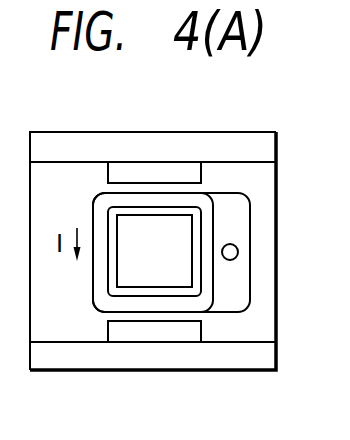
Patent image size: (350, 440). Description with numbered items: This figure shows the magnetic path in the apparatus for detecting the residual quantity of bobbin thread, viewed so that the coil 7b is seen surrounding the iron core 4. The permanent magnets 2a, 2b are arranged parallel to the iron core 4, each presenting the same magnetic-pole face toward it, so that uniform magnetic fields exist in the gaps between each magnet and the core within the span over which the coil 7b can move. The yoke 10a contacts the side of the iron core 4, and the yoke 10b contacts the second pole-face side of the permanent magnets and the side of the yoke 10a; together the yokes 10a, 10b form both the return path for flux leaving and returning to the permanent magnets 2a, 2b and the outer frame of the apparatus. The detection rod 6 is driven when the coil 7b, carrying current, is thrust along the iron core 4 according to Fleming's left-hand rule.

The yoke 10a is at (259, 313).
The yoke 10b is at (120, 146).
The permanent magnet 2a is at (152, 170).
The permanent magnet 2b is at (178, 333).
The iron core 4 is at (167, 232).
The detection rod 6 is at (238, 251).
The coil 7b is at (210, 293).